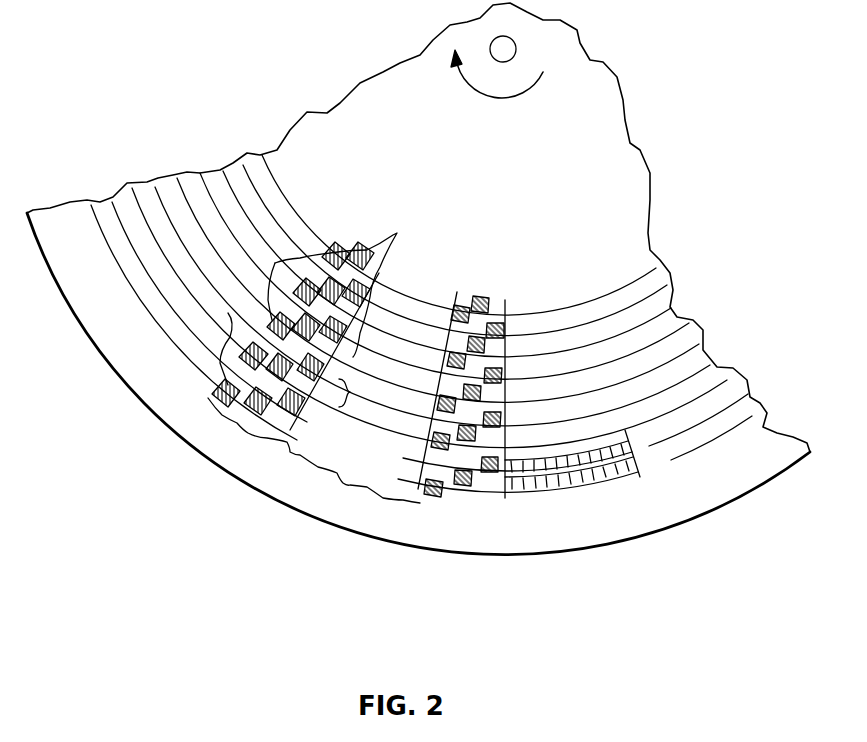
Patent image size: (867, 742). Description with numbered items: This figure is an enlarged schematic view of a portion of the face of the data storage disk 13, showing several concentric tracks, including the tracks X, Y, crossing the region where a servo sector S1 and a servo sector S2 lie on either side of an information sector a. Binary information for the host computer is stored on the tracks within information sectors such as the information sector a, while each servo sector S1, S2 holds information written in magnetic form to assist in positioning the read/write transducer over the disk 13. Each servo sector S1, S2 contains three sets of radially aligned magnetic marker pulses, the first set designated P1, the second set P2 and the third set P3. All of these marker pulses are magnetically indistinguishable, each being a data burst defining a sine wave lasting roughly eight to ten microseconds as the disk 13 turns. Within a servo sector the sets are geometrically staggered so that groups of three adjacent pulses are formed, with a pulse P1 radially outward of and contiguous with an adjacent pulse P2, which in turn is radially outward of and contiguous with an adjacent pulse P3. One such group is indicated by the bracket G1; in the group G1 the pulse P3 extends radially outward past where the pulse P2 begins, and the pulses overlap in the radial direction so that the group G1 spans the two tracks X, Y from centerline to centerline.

The disk 13 is at (543, 158).
The first set of marker pulses P1 is at (277, 263).
The second set of marker pulses P2 is at (378, 270).
The third set of marker pulses P3 is at (343, 366).
The pulse group G1 is at (357, 393).
The servo sector S1 is at (314, 450).
The servo sector S2 is at (508, 500).
The track X is at (222, 325).
The track Y is at (213, 283).
The information sector a is at (348, 496).